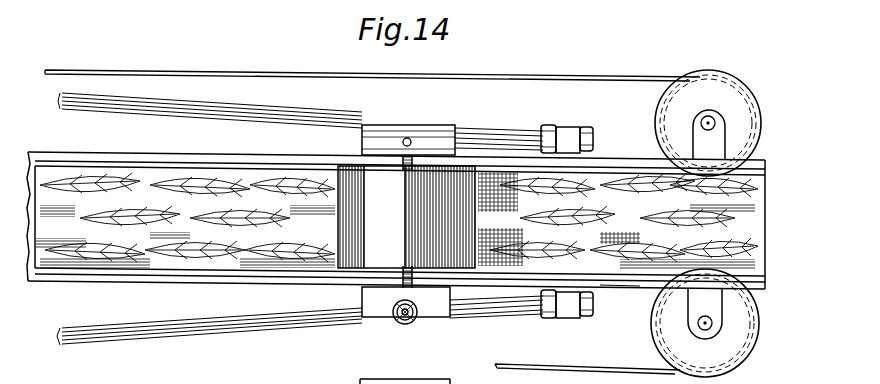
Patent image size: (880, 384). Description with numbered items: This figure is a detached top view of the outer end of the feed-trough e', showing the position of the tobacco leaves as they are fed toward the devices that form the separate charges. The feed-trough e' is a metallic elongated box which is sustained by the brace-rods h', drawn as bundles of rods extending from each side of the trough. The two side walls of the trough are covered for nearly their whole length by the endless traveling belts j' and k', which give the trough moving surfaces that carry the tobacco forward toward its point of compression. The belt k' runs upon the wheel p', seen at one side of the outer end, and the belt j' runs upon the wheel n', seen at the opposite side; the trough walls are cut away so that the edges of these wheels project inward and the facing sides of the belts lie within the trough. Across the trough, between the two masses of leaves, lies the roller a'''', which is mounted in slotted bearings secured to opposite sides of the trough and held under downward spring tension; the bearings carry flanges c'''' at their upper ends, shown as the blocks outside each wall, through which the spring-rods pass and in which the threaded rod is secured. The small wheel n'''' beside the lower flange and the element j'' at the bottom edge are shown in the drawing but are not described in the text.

The feed-trough e' is at (404, 213).
The endless traveling belt k' is at (400, 113).
The brace-rods h' is at (325, 219).
The flanges c'''' is at (423, 221).
The wheel p' is at (708, 123).
The roller a'''' is at (406, 221).
The small wheel n'''' is at (411, 322).
The endless traveling belt j' is at (620, 298).
The wheel n' is at (705, 323).
The lower belt j'' is at (520, 374).